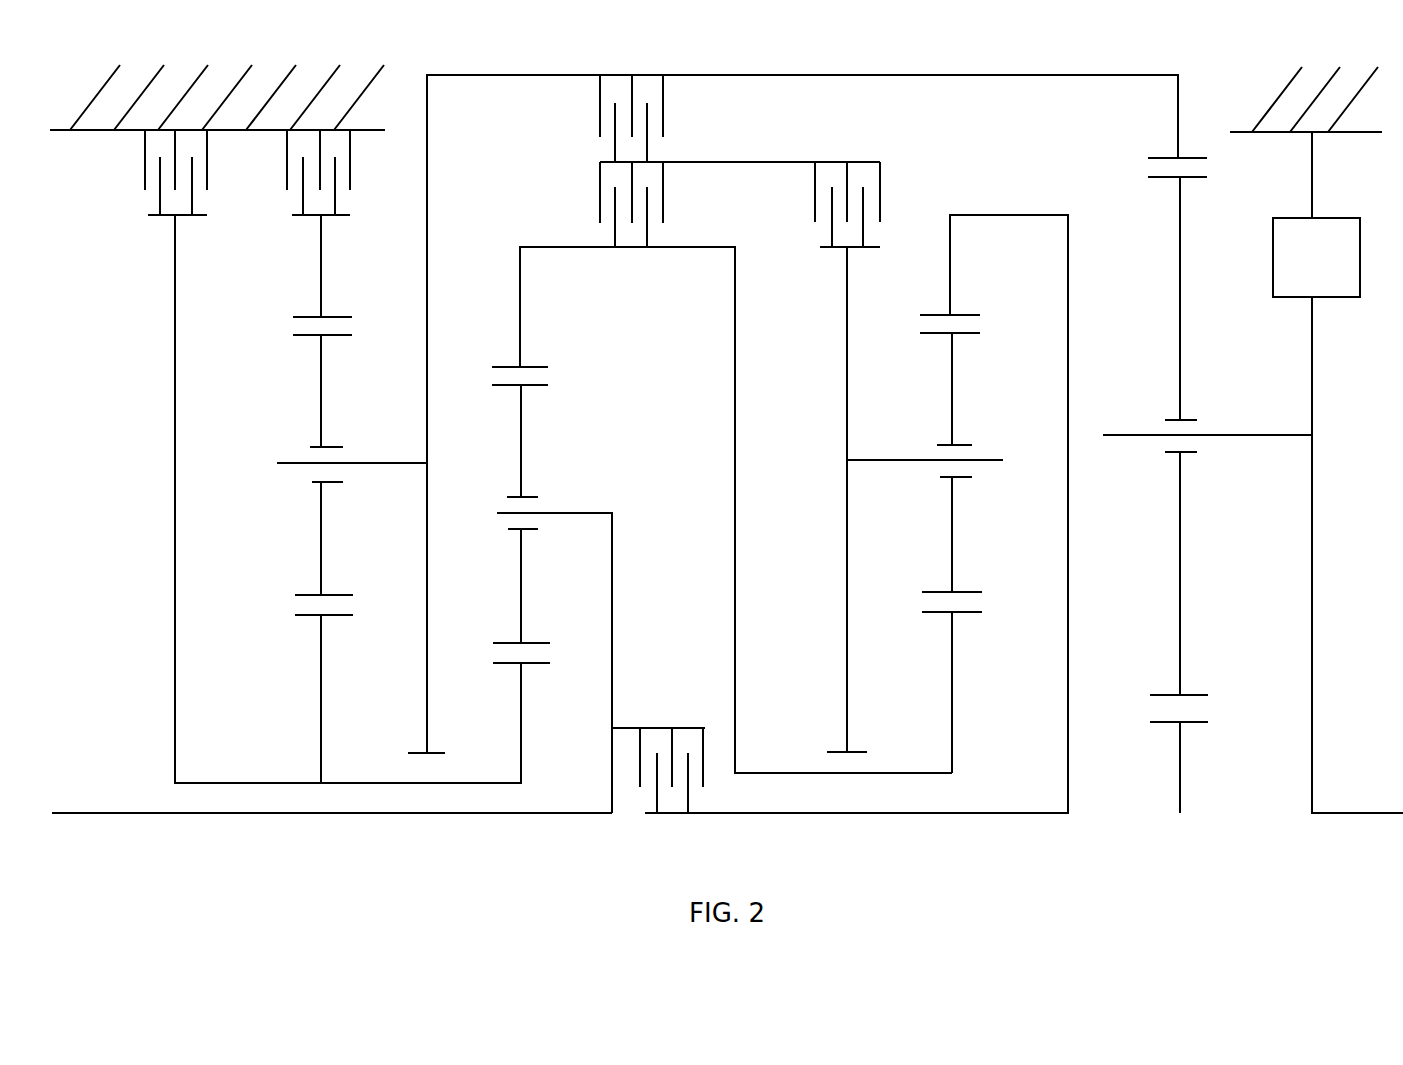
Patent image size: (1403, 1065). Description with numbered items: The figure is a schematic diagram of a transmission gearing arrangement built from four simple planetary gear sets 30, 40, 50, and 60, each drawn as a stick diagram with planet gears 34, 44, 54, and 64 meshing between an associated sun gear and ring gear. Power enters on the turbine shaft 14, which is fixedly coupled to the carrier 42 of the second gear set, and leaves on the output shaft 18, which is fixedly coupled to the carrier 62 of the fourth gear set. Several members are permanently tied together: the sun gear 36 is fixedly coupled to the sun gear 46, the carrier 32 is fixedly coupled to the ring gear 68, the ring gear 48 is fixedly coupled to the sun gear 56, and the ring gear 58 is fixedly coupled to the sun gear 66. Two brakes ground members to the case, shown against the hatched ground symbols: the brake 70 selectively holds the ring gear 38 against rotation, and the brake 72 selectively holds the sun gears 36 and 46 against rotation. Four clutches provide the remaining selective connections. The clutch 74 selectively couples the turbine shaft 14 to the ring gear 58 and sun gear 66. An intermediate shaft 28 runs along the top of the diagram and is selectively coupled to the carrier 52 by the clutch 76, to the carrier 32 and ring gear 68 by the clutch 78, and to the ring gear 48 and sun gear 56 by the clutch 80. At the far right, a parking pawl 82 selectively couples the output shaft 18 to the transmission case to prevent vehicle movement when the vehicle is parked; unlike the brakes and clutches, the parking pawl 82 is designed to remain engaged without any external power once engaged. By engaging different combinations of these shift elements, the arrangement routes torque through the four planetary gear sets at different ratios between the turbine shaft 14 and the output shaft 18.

The turbine shaft 14 is at (172, 813).
The output shaft 18 is at (1377, 813).
The intermediate shaft 28 is at (777, 163).
The planetary gear set 30 is at (348, 546).
The carrier 32 is at (427, 268).
The planet gears 34 is at (330, 400).
The sun gear 36 is at (323, 658).
The ring gear 38 is at (325, 277).
The planetary gear set 40 is at (723, 564).
The carrier 42 is at (613, 612).
The planet gears 44 is at (525, 450).
The sun gear 46 is at (521, 707).
The ring gear 48 is at (520, 323).
The planetary gear set 50 is at (856, 547).
The carrier 52 is at (847, 423).
The planet gears 54 is at (955, 398).
The sun gear 56 is at (952, 655).
The ring gear 58 is at (952, 276).
The planetary gear set 60 is at (1182, 802).
The carrier 62 is at (1312, 483).
The planet gears 64 is at (1182, 363).
The sun gear 66 is at (1182, 770).
The ring gear 68 is at (1178, 131).
The brake 70 is at (287, 157).
The brake 72 is at (143, 157).
The clutch 74 is at (683, 728).
The clutch 76 is at (828, 160).
The clutch 78 is at (600, 128).
The clutch 80 is at (600, 190).
The parking pawl 82 is at (1360, 270).